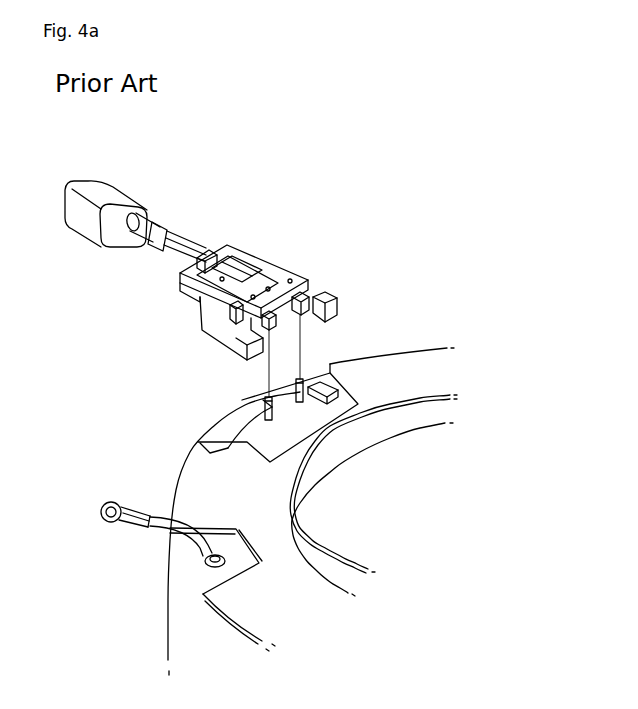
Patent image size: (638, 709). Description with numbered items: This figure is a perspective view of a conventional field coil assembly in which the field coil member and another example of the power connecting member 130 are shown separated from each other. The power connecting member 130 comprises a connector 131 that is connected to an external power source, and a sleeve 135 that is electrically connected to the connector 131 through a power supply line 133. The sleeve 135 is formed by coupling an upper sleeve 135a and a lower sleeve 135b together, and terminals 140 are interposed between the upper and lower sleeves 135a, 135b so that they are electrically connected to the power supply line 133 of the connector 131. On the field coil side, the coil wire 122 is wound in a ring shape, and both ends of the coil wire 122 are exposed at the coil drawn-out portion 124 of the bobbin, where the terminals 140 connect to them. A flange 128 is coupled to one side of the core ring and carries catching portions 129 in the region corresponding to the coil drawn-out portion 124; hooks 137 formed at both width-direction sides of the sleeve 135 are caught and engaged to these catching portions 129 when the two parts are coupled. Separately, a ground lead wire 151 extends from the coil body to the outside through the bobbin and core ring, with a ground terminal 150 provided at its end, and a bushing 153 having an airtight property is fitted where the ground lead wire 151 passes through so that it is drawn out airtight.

The coil wire 122 is at (296, 379).
The coil drawn-out portion 124 is at (245, 448).
The flange 128 is at (417, 366).
The catching portions 129 is at (248, 427).
The power connecting member 130 is at (241, 264).
The connector 131 is at (118, 184).
The power supply line 133 is at (140, 214).
The sleeve 135 is at (180, 321).
The upper sleeve 135a is at (198, 298).
The lower sleeve 135b is at (202, 325).
The hooks 137 is at (328, 294).
The terminals 140 is at (265, 330).
The ground terminal 150 is at (100, 504).
The ground lead wire 151 is at (158, 531).
The bushing 153 is at (205, 557).